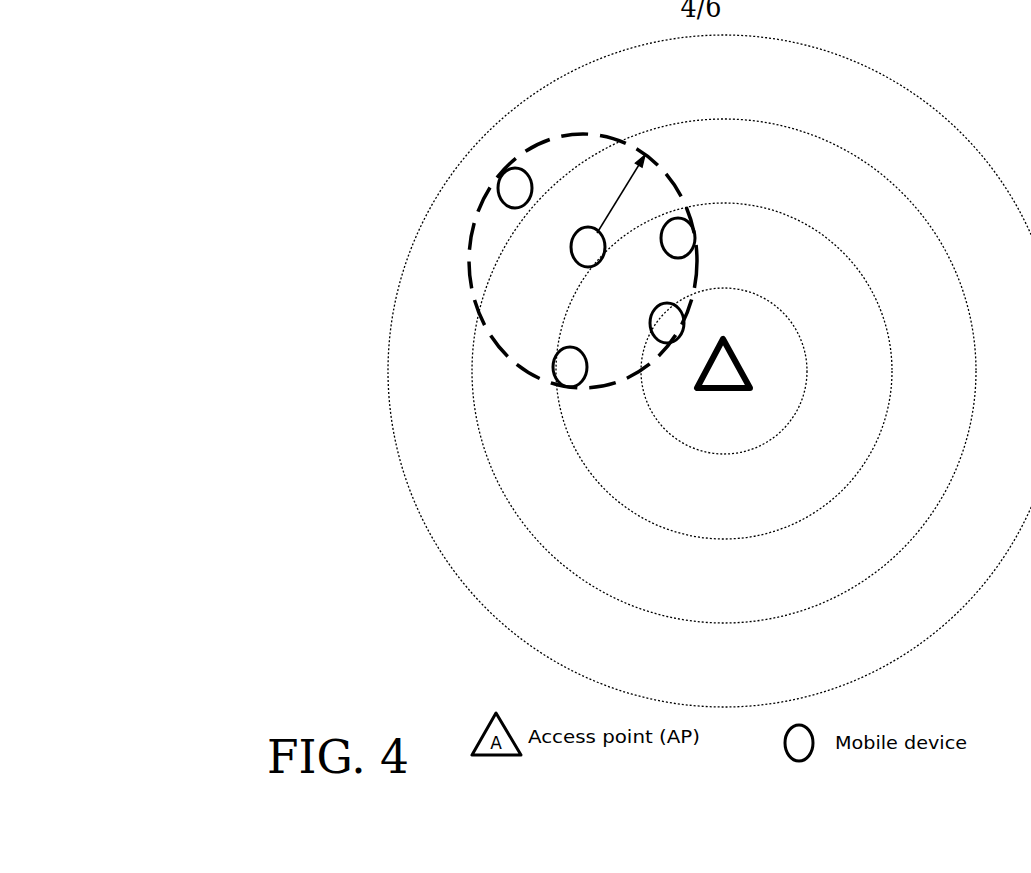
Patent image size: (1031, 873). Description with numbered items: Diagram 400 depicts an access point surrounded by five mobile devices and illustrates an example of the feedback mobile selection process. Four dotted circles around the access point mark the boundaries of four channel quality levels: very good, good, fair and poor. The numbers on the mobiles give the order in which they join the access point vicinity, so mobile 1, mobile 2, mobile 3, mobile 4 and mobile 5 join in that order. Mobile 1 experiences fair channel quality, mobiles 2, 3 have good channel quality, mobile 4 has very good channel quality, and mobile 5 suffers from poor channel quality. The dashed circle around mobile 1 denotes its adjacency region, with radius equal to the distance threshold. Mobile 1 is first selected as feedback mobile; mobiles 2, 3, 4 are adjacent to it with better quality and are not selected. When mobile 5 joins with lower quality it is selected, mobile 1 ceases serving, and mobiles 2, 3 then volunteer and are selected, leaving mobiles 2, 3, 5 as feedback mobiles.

The diagram 400 is at (268, 98).
The mobile 1 is at (588, 247).
The mobile 2 is at (678, 238).
The mobile 3 is at (570, 367).
The mobile 4 is at (667, 323).
The mobile 5 is at (515, 188).